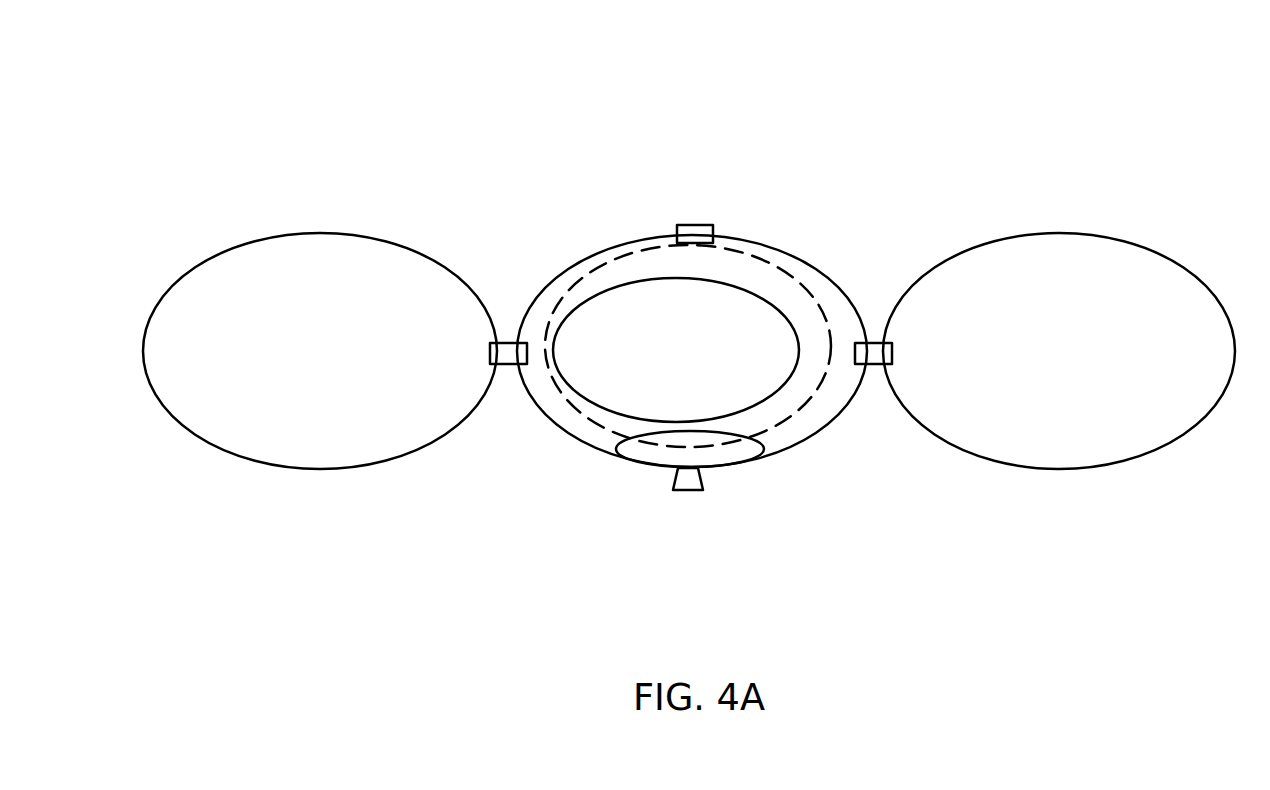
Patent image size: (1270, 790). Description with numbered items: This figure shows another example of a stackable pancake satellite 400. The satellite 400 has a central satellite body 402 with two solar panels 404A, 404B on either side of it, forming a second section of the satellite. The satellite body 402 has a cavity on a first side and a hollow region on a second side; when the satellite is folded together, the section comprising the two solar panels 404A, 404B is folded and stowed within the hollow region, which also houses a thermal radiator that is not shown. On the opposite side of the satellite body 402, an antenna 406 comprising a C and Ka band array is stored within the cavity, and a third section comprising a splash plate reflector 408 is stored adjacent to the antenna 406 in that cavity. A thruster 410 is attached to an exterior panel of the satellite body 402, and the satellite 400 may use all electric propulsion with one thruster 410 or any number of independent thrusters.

The stackable pancake satellite 400 is at (702, 150).
The satellite body 402 is at (593, 250).
The solar panel 404A is at (195, 268).
The solar panel 404B is at (1058, 233).
The antenna 406 is at (753, 292).
The splash plate reflector 408 is at (818, 400).
The thruster 410 is at (685, 490).